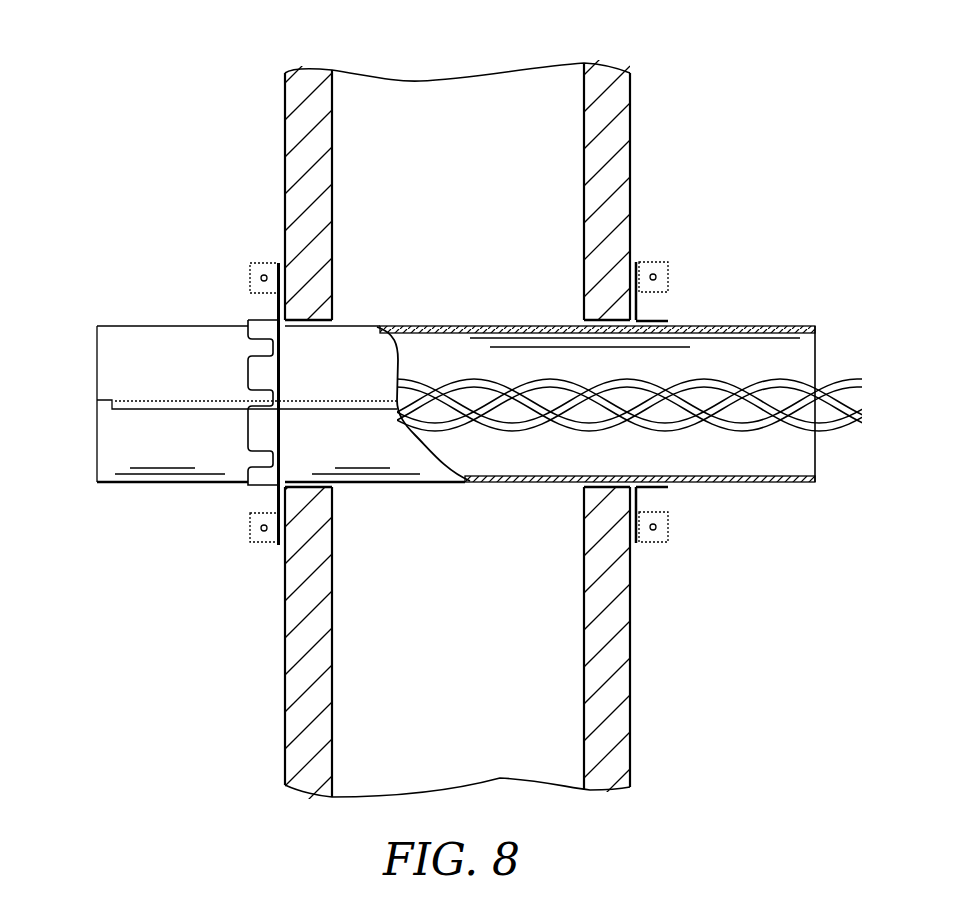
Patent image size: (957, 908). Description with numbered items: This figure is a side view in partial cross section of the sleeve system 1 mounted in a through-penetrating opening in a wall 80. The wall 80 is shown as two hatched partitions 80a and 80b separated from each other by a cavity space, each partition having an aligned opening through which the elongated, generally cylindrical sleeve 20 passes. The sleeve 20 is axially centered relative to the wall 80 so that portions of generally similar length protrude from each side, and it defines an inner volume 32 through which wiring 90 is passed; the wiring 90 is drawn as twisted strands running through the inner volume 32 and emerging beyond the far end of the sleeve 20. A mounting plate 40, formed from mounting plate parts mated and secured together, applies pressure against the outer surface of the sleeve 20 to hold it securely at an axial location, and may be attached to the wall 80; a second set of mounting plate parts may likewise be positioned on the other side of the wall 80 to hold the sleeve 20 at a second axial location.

The sleeve system 1 is at (208, 253).
The sleeve 20 is at (104, 458).
The inner volume 32 is at (610, 464).
The mounting plate 40 is at (280, 500).
The wall 80 is at (312, 71).
The first partition 80a is at (300, 132).
The second partition 80b is at (620, 98).
The wiring 90 is at (841, 428).